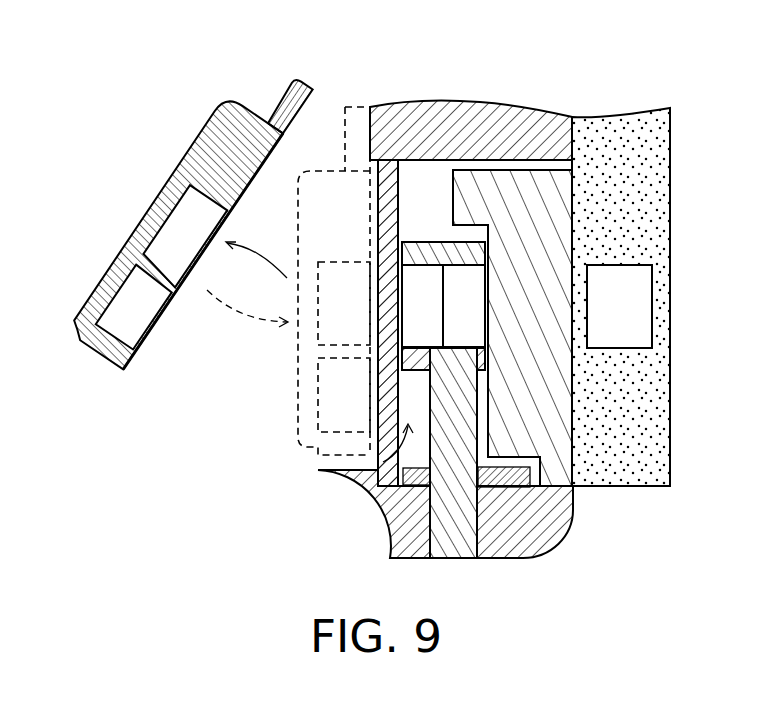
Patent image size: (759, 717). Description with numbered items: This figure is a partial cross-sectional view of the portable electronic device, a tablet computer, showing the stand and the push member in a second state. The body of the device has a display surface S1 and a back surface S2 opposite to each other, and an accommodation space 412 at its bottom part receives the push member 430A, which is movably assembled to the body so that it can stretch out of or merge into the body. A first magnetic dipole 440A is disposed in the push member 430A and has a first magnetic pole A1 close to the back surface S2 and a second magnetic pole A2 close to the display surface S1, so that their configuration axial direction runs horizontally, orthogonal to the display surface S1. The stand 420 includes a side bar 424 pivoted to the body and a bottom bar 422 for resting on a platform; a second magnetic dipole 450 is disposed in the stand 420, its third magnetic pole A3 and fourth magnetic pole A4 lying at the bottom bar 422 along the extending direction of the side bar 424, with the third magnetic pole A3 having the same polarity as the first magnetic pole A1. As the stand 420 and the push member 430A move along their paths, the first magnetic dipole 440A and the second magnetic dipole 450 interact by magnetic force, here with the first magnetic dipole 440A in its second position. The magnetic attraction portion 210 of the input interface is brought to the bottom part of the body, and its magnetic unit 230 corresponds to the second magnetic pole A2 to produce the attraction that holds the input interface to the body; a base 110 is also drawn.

The base 110 is at (543, 522).
The magnetic attraction portion 210 is at (650, 445).
The magnetic unit 230 is at (625, 307).
The accommodation space 412 is at (378, 465).
The stand 420 is at (189, 197).
The bottom bar 422 is at (230, 138).
The side bar 424 is at (282, 101).
The push member 430A is at (458, 555).
The first magnetic dipole 440A is at (471, 248).
The second magnetic dipole 450 is at (191, 297).
The first magnetic pole A1 is at (420, 282).
The second magnetic pole A2 is at (462, 282).
The third magnetic pole A3 is at (180, 228).
The fourth magnetic pole A4 is at (132, 295).
The display surface S1 is at (572, 195).
The back surface S2 is at (370, 137).